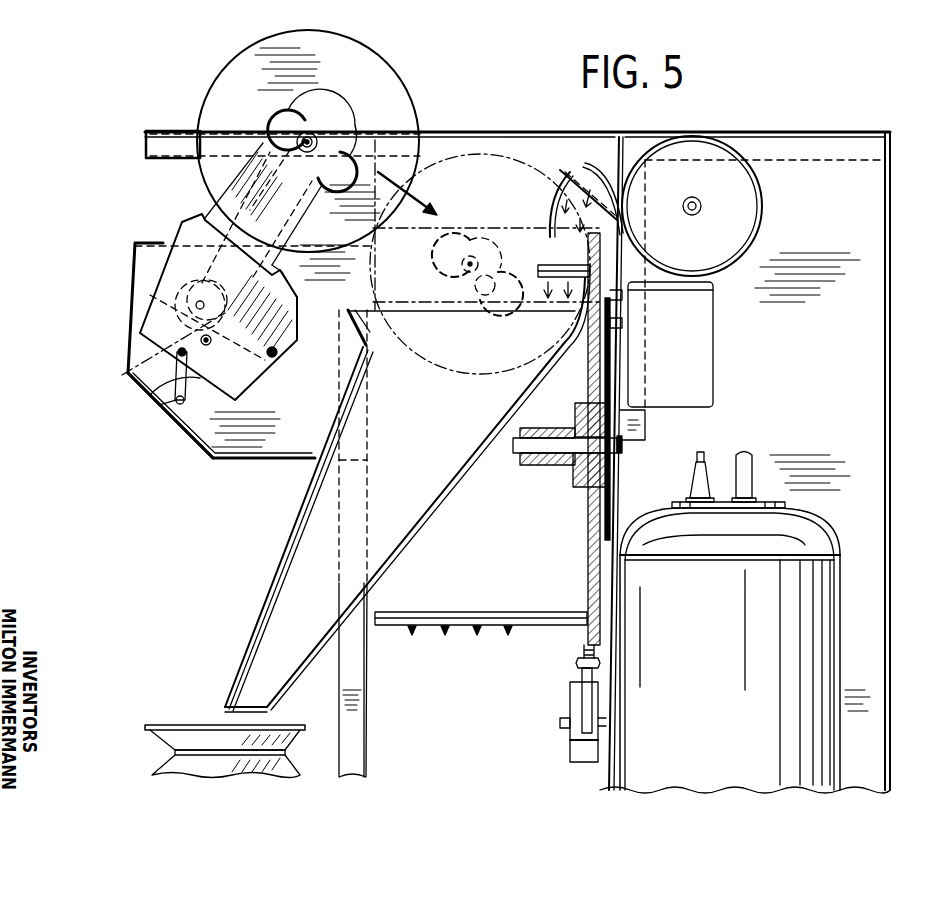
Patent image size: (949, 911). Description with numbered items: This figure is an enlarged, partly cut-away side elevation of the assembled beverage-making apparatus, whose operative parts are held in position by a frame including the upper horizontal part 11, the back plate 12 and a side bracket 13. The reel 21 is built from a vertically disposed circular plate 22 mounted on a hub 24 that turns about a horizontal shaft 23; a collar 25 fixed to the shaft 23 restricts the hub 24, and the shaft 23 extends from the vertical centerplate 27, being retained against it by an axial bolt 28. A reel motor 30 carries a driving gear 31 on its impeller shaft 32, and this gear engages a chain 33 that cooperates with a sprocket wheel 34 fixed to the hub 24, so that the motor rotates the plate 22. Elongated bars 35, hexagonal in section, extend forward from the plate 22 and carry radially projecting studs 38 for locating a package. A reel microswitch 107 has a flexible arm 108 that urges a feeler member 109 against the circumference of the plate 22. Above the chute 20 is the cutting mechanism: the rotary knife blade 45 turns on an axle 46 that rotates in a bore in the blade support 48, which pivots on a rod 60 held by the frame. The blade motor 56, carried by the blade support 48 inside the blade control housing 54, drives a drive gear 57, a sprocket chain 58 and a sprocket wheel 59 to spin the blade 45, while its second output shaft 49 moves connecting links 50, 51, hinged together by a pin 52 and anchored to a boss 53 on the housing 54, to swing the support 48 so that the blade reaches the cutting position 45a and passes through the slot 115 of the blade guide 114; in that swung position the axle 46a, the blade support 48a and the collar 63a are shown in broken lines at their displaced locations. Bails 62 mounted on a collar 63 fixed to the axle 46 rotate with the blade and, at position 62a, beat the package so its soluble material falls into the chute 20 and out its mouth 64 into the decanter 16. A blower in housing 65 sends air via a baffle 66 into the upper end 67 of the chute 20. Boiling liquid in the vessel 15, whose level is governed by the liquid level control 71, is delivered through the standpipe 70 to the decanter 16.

The upper horizontal part 11 is at (770, 133).
The back plate 12 is at (888, 420).
The side bracket 13 is at (368, 729).
The vessel 15 is at (850, 623).
The decanter 16 is at (152, 745).
The chute 20 is at (318, 511).
The reel 21 is at (583, 363).
The circular plate 22 is at (586, 567).
The shaft 23 is at (512, 448).
The hub 24 is at (574, 420).
The collar 25 is at (573, 478).
The centerplate 27 is at (646, 415).
The axial bolt 28 is at (624, 444).
The reel motor 30 is at (716, 349).
The driving gear 31 is at (624, 293).
The impeller shaft 32 is at (624, 322).
The chain 33 is at (612, 340).
The sprocket wheel 34 is at (604, 515).
The elongated bars 35 is at (562, 266).
The studs 38 is at (495, 636).
The rotary knife blade 45 is at (400, 90).
The knife blade position 45a is at (500, 170).
The axle 46 is at (318, 137).
The roller alternate position 46a is at (465, 275).
The blade support 48 is at (318, 102).
The roller guard alternate position 48a is at (476, 240).
The output shaft 49 is at (210, 346).
The connecting link 50 is at (130, 357).
The connecting link 51 is at (170, 393).
The pin 52 is at (130, 377).
The boss 53 is at (162, 404).
The blade control housing 54 is at (178, 435).
The blade motor 56 is at (160, 300).
The drive gear 57 is at (208, 282).
The sprocket chain 58 is at (212, 210).
The sprocket wheel 59 is at (272, 180).
The rod 60 is at (258, 372).
The bails 62 is at (270, 120).
The bail position 62a is at (452, 232).
The collar 63 is at (312, 138).
The axis alternate position 63a is at (484, 252).
The mouth 64 is at (215, 706).
The blower housing 65 is at (752, 215).
The baffle 66 is at (612, 160).
The upper end of chute 67 is at (443, 312).
The standpipe 70 is at (752, 462).
The liquid level control 71 is at (690, 478).
The reel microswitch 107 is at (570, 737).
The flexible arm 108 is at (582, 692).
The feeler member 109 is at (576, 663).
The blade guide 114 is at (570, 182).
The slot 115 is at (555, 222).